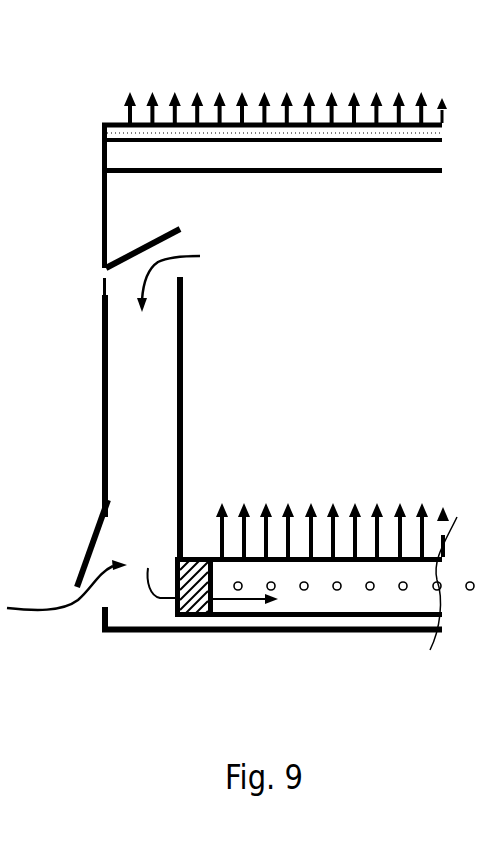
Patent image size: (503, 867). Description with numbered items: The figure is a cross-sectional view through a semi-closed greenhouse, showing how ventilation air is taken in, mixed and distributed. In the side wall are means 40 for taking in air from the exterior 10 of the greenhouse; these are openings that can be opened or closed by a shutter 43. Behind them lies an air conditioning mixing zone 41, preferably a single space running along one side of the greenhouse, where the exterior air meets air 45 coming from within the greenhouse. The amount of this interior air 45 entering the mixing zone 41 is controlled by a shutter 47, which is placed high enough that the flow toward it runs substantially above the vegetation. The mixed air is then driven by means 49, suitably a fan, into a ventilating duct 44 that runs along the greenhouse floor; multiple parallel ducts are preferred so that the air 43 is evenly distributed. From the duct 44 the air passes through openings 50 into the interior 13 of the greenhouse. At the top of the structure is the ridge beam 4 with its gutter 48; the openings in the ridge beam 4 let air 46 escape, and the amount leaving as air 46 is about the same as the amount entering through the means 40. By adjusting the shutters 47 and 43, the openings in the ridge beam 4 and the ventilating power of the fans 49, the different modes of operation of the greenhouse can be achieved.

The ridge beam 4 is at (102, 135).
The exterior 10 is at (61, 402).
The interior 13 is at (391, 354).
The means to take in air 40 is at (100, 590).
The air conditioning mixing zone 41 is at (139, 615).
The shutter 43 is at (80, 563).
The ventilating duct 44 is at (347, 593).
The air from within the greenhouse 45 is at (189, 276).
The air leaving via ridge beam openings 46 is at (285, 87).
The shutter 47 is at (140, 254).
The gutter 48 is at (102, 171).
The fan 49 is at (200, 620).
The openings 50 is at (405, 590).